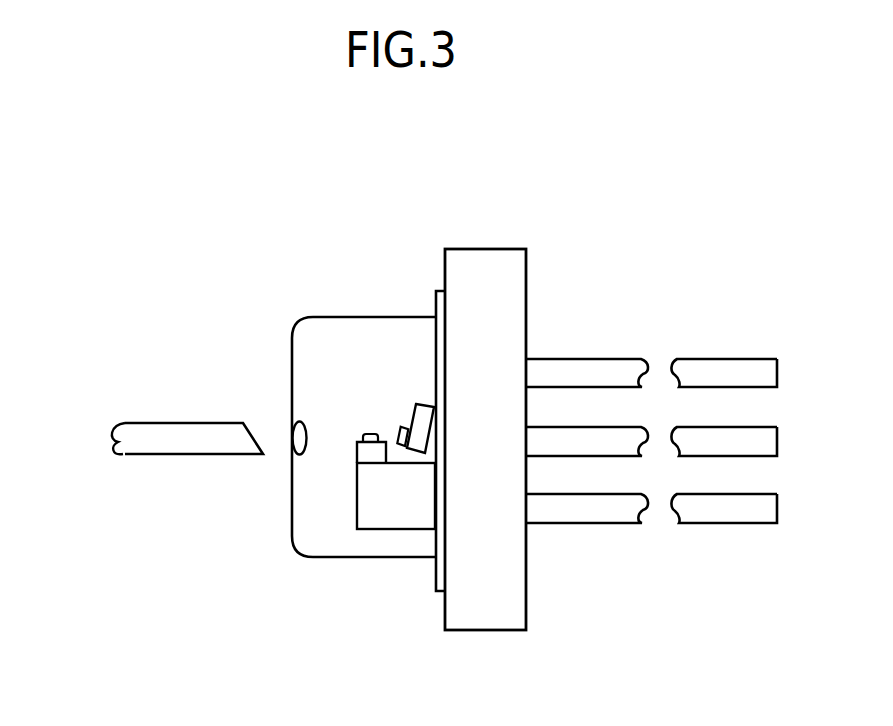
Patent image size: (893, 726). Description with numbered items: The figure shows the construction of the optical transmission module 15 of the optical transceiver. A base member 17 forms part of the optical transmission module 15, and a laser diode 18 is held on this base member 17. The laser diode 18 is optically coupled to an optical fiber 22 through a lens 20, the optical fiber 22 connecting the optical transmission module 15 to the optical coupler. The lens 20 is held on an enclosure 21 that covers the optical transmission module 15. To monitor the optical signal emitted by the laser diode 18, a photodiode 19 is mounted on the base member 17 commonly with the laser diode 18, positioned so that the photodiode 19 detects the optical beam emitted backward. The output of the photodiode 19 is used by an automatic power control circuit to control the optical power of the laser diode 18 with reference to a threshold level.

The optical transmission module 15 is at (593, 203).
The base member 17 is at (407, 508).
The laser diode 18 is at (361, 433).
The photodiode 19 is at (403, 404).
The lens 20 is at (292, 450).
The enclosure 21 is at (292, 546).
The optical fiber 22 is at (145, 425).